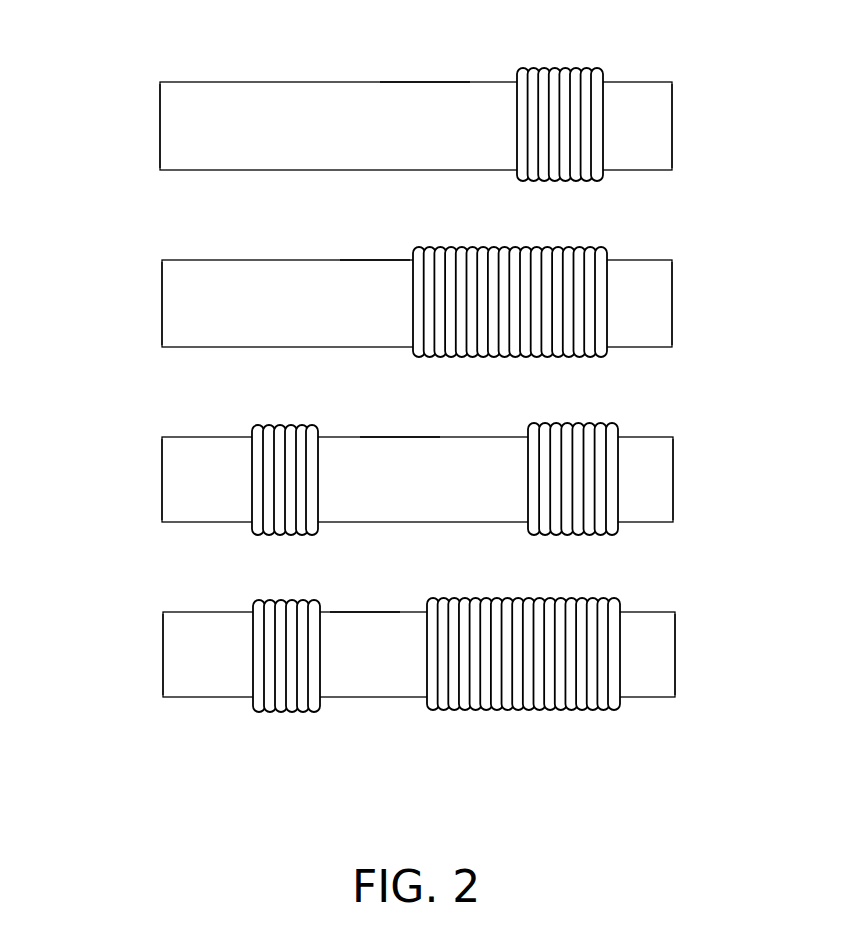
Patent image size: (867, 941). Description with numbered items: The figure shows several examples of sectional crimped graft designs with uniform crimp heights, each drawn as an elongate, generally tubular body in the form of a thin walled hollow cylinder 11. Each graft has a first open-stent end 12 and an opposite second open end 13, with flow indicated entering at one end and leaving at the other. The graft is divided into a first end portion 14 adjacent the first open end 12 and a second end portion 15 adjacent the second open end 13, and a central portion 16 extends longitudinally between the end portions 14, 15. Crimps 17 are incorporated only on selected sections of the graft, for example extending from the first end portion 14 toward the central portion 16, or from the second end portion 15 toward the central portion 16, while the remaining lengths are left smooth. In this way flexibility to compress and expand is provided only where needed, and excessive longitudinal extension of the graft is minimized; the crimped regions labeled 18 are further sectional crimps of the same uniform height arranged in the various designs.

The thin walled hollow cylinder 11 is at (309, 81).
The first open-stent end 12 is at (157, 123).
The second open end 13 is at (673, 125).
The first end portion 14 is at (188, 103).
The second end portion 15 is at (643, 92).
The central portion 16 is at (425, 130).
The crimps 17 is at (292, 462).
The second coil 18 is at (561, 85).